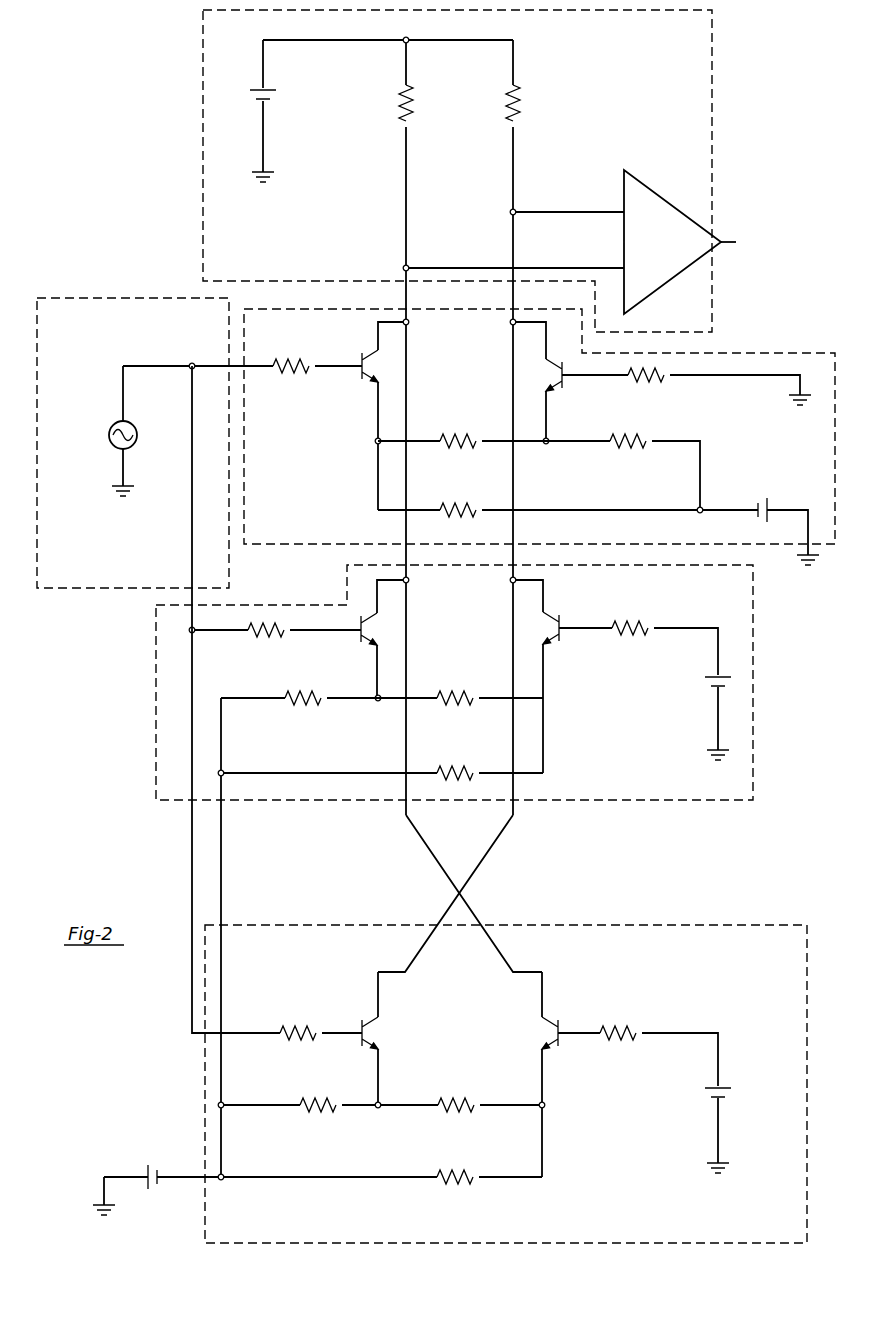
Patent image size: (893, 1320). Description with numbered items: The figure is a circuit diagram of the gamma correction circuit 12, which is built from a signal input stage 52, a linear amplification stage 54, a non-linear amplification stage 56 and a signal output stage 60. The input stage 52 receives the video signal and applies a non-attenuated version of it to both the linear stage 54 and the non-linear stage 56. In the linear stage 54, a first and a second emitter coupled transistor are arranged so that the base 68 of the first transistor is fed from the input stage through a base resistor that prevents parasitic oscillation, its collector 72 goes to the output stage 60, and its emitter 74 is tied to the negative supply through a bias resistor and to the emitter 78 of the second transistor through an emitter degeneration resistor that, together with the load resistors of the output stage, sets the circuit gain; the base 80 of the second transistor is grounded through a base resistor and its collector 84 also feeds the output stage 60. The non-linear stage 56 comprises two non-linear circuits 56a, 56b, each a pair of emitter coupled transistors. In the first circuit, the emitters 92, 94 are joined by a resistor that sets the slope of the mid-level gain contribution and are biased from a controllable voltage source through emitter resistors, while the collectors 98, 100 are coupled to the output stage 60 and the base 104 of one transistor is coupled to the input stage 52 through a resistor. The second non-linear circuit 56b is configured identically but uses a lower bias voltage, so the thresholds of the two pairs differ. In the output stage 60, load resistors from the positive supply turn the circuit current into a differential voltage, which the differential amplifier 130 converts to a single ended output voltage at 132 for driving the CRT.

The gamma correction circuit 12 is at (135, 196).
The signal input stage 52 is at (93, 298).
The linear amplification stage 54 is at (798, 353).
The non-linear amplification stage 56 is at (766, 702).
The first non-linear circuit 56a is at (155, 717).
The second non-linear circuit 56b is at (205, 1095).
The signal output stage 60 is at (712, 50).
The base 68 is at (327, 369).
The collector 72 is at (378, 350).
The emitter 74 is at (376, 418).
The emitter 78 is at (545, 410).
The base 80 is at (585, 377).
The collector 84 is at (545, 345).
The emitter 92 is at (380, 652).
The emitter 94 is at (546, 680).
The collector 98 is at (380, 618).
The collector 100 is at (544, 600).
The base 104 is at (322, 632).
The differential amplifier 130 is at (670, 198).
The single ended output 132 is at (723, 238).